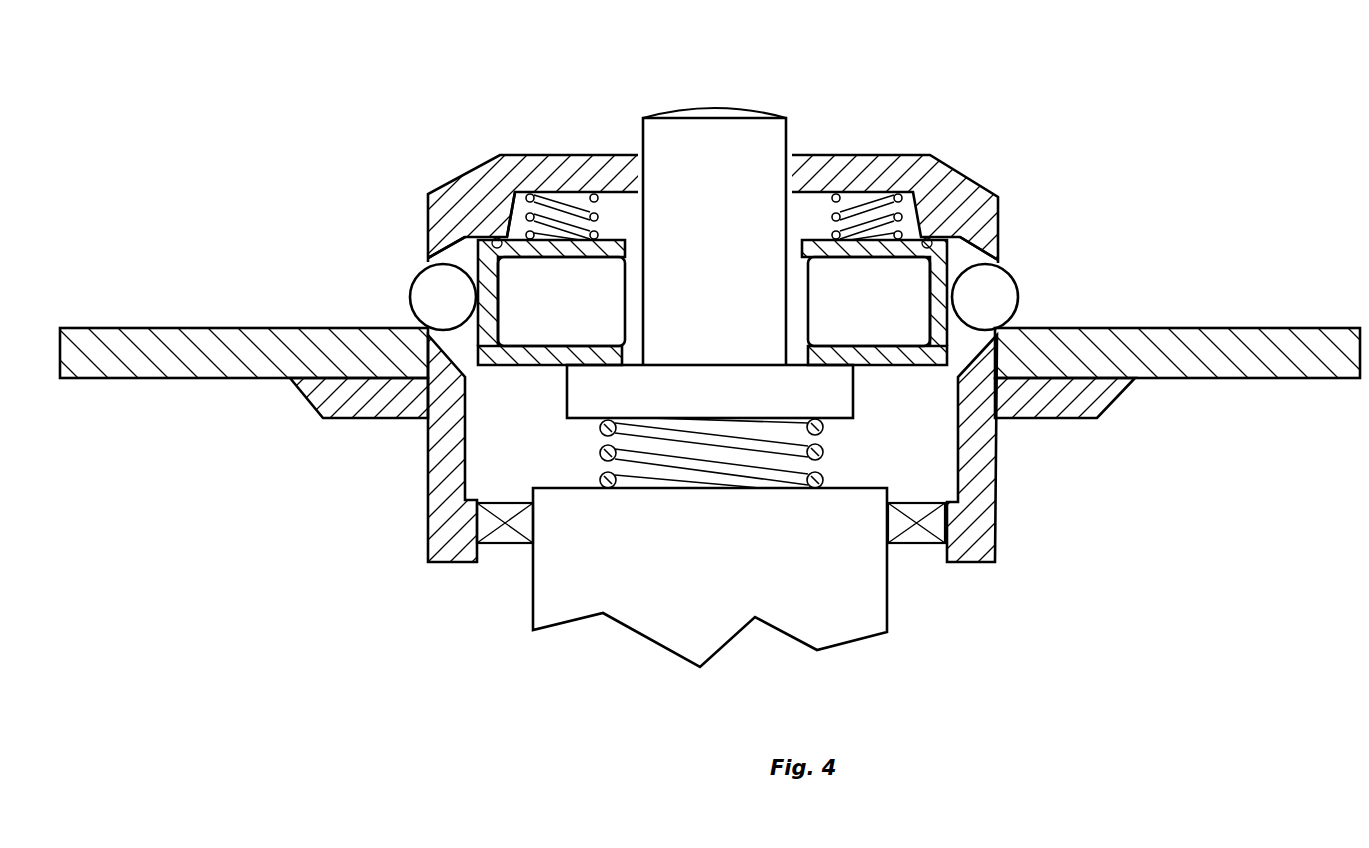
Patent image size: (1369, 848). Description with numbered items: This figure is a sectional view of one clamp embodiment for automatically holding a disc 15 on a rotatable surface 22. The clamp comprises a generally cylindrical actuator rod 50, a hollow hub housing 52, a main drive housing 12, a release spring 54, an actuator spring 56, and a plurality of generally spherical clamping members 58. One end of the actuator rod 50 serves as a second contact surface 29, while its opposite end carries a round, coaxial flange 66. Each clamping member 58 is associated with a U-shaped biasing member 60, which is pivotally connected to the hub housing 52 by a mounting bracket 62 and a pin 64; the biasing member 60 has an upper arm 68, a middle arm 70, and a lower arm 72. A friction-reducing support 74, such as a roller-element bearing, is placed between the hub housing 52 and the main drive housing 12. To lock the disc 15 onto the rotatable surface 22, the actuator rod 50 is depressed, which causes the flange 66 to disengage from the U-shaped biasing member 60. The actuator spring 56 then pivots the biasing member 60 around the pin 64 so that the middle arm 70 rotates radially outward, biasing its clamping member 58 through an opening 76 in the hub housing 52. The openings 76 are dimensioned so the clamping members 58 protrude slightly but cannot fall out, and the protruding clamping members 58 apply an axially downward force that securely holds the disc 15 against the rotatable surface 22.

The main drive housing 12 is at (728, 584).
The disc 15 is at (1160, 335).
The rotatable surface 22 is at (372, 398).
The second contact surface 29 is at (740, 108).
The actuator rod 50 is at (730, 190).
The hub housing 52 is at (868, 163).
The release spring 54 is at (826, 452).
The actuator spring 56 is at (562, 200).
The clamping member 58 is at (432, 302).
The U-shaped biasing member 60 is at (712, 302).
The mounting bracket 62 is at (475, 222).
The pin 64 is at (497, 238).
The flange 66 is at (818, 402).
The upper arm 68 is at (808, 258).
The middle arm 70 is at (510, 283).
The lower arm 72 is at (810, 350).
The friction-reducing support 74 is at (504, 548).
The opening 76 is at (440, 258).